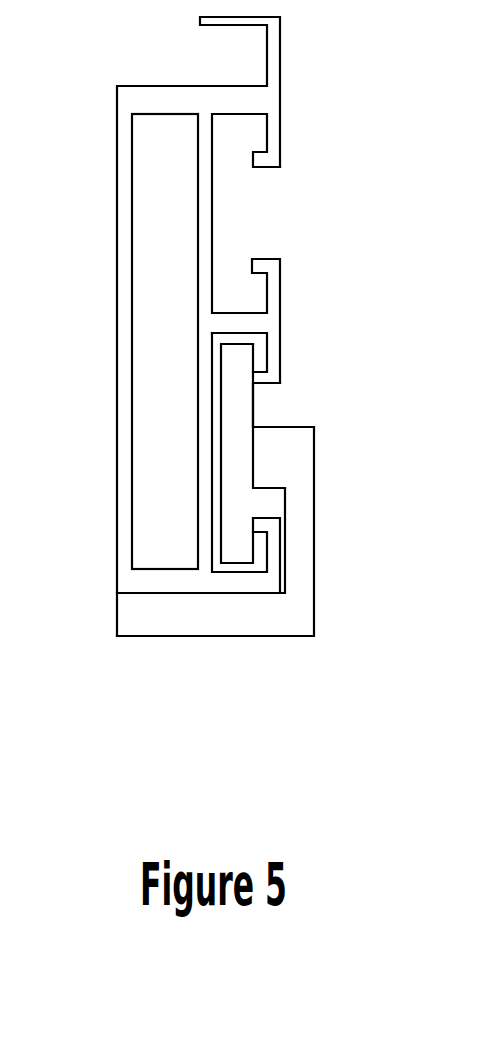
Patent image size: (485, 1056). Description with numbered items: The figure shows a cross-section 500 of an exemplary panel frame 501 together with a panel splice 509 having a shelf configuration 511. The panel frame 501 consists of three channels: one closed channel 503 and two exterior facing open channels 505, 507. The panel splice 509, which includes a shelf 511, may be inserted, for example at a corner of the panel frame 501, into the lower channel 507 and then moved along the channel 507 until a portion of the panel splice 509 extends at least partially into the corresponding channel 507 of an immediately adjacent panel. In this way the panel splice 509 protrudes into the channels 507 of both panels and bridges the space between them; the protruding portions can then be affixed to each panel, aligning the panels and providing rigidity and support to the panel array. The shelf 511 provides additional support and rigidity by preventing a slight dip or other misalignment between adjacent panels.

The cross-section 500 is at (193, 353).
The panel frame 501 is at (118, 395).
The closed channel 503 is at (165, 341).
The open channel 505 is at (246, 248).
The open channel 507 is at (277, 403).
The panel splice 509 is at (248, 463).
The shelf 511 is at (140, 623).